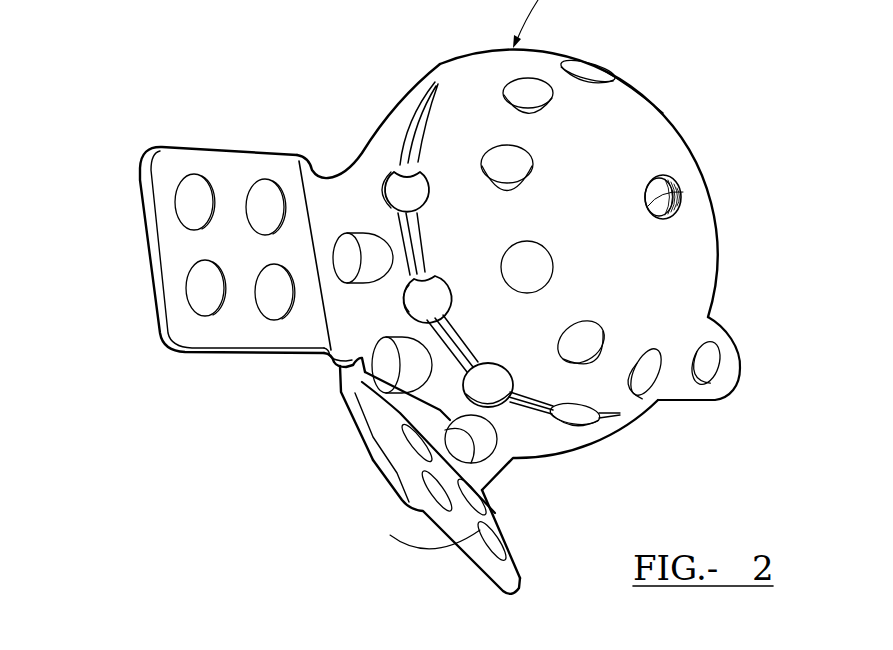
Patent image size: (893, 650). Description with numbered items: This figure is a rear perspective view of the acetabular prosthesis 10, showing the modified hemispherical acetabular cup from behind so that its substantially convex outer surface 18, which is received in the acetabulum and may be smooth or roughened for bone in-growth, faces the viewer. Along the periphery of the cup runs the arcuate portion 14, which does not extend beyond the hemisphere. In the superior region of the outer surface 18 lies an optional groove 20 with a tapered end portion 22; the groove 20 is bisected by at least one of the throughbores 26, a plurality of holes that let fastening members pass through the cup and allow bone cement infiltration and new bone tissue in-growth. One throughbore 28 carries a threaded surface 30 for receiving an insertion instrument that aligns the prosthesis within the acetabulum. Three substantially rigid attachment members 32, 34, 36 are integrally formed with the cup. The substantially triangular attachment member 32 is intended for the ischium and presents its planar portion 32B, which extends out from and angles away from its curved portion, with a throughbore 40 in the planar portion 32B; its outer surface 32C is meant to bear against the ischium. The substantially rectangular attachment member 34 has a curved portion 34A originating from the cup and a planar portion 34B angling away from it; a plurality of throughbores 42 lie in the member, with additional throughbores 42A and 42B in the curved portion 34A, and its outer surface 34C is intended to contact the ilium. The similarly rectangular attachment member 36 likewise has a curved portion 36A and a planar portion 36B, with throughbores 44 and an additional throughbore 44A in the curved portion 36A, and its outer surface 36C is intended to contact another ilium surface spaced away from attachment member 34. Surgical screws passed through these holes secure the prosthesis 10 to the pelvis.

The acetabular prosthesis 10 is at (684, 55).
The arcuate portion 14 is at (378, 125).
The outer surface 18 is at (642, 152).
The groove 20 is at (410, 122).
The tapered end portion 22 is at (441, 84).
The throughbores 26 is at (580, 80).
The throughbore 28 is at (684, 192).
The threaded surface 30 is at (652, 211).
The attachment member 32 is at (750, 360).
The planar portion 32B is at (729, 400).
The outer surface 32C is at (713, 337).
The attachment member 34 is at (545, 569).
The curved portion 34A is at (343, 405).
The planar portion 34B is at (373, 458).
The outer surface 34C is at (495, 525).
The attachment member 36 is at (132, 146).
The curved portion 36A is at (328, 190).
The planar portion 36B is at (193, 157).
The outer surface 36C is at (203, 330).
The throughbore 40 is at (690, 387).
The throughbores 42 is at (483, 535).
The throughbore 42A is at (337, 375).
The throughbore 42B is at (484, 463).
The throughbores 44 is at (253, 285).
The throughbore 44A is at (334, 283).